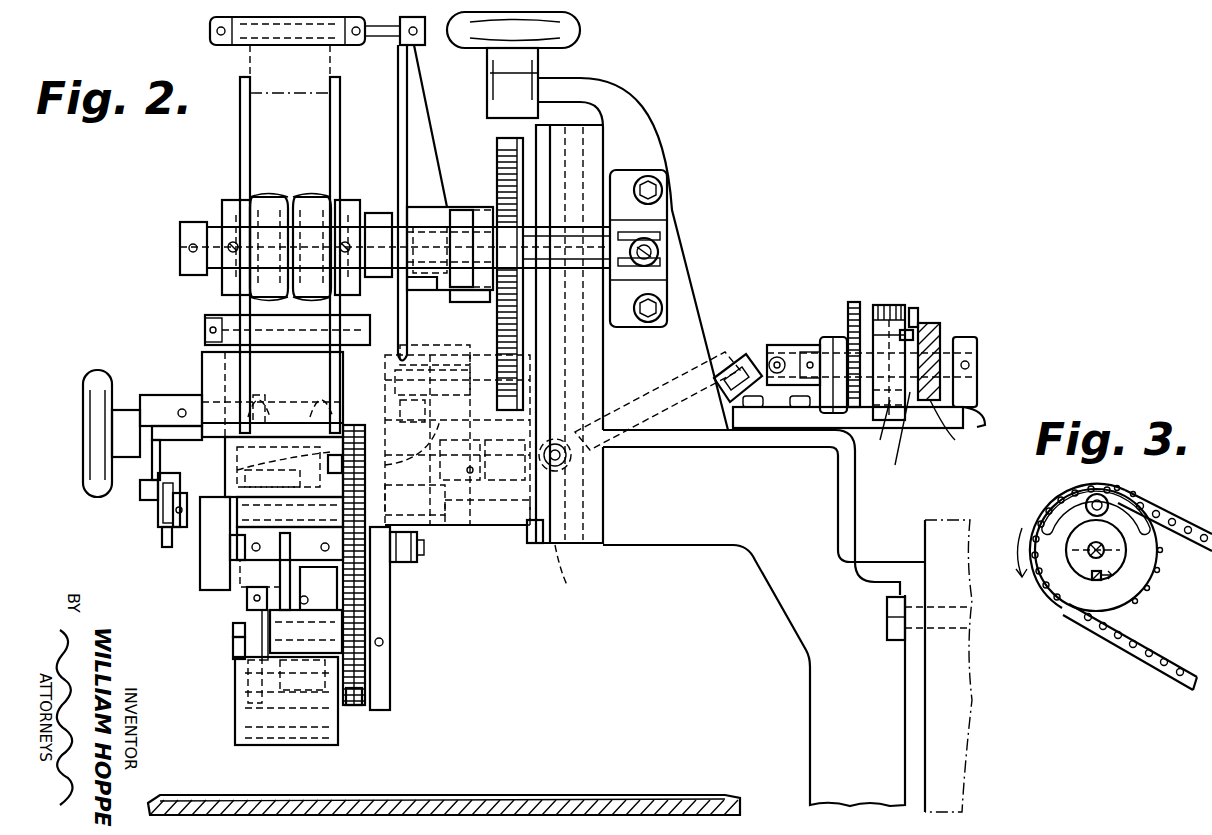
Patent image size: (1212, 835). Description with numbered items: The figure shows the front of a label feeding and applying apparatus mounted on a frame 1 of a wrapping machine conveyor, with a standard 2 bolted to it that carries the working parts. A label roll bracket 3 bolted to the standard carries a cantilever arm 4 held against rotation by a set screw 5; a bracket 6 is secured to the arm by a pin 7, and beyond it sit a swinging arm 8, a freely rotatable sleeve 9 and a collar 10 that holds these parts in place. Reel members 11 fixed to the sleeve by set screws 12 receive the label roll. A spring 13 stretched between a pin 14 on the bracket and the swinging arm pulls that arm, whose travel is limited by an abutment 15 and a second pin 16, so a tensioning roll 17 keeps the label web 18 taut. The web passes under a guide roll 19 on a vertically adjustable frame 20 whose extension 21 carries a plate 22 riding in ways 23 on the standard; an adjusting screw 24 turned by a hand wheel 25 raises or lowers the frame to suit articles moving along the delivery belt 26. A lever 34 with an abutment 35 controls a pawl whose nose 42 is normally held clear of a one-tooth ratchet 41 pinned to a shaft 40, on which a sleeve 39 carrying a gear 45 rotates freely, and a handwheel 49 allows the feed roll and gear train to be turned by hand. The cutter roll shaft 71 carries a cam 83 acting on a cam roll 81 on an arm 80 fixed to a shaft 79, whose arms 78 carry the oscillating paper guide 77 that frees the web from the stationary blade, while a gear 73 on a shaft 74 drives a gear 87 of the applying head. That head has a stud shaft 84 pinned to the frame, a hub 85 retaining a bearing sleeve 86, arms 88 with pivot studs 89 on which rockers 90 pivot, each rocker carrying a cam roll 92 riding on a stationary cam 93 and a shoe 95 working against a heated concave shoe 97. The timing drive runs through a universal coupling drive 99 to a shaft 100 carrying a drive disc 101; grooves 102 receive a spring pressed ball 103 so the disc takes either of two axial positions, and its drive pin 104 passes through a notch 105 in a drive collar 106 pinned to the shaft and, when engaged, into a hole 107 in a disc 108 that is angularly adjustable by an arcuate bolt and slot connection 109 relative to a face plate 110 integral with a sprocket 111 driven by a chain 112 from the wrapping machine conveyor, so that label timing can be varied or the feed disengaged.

In FIG. 2, the frame 1 is at (964, 684).
In FIG. 2, the standard 2 is at (798, 615).
In FIG. 2, the label roll bracket 3 is at (668, 215).
In FIG. 2, the cantilever arm 4 is at (660, 240).
In FIG. 2, the set screw 5 is at (660, 262).
In FIG. 2, the bracket 6 is at (462, 213).
In FIG. 2, the pin 7 is at (481, 224).
In FIG. 2, the swinging arm 8 is at (432, 138).
In FIG. 2, the sleeve 9 is at (375, 240).
In FIG. 2, the collar 10 is at (190, 228).
In FIG. 2, the reel members 11 is at (330, 147).
In FIG. 2, the set screws 12 is at (232, 243).
In FIG. 2, the spring 13 is at (408, 333).
In FIG. 2, the pin 14 is at (431, 215).
In FIG. 2, the abutment 15 is at (470, 306).
In FIG. 2, the second pin 16 is at (429, 250).
In FIG. 2, the tensioning roll 17 is at (345, 47).
In FIG. 2, the label web 18 is at (328, 72).
In FIG. 2, the guide roll 19 is at (232, 325).
In FIG. 2, the frame 20 is at (380, 690).
In FIG. 2, the extension 21 is at (510, 540).
In FIG. 2, the plate 22 is at (574, 571).
In FIG. 2, the ways 23 is at (538, 550).
In FIG. 2, the adjusting screw 24 is at (497, 158).
In FIG. 2, the hand wheel 25 is at (580, 32).
In FIG. 2, the delivery belt 26 is at (462, 793).
In FIG. 2, the lever 34 is at (420, 352).
In FIG. 2, the abutment 35 is at (465, 378).
In FIG. 2, the sleeve 39 is at (415, 504).
In FIG. 2, the shaft 40 is at (510, 470).
In FIG. 2, the one-tooth ratchet 41 is at (482, 530).
In FIG. 2, the nose 42 is at (490, 430).
In FIG. 2, the gear 45 is at (457, 440).
In FIG. 2, the handwheel 49 is at (90, 478).
In FIG. 2, the shaft 71 is at (173, 513).
In FIG. 2, the gear 73 is at (365, 557).
In FIG. 2, the shaft 74 is at (418, 550).
In FIG. 2, the oscillating paper guide 77 is at (293, 471).
In FIG. 2, the arms 78 is at (302, 470).
In FIG. 2, the shaft 79 is at (303, 402).
In FIG. 2, the arm 80 is at (165, 405).
In FIG. 2, the cam roll 81 is at (166, 480).
In FIG. 2, the cam 83 is at (165, 538).
In FIG. 2, the stud shaft 84 is at (245, 640).
In FIG. 2, the hub 85 is at (233, 628).
In FIG. 2, the bearing sleeve 86 is at (300, 662).
In FIG. 2, the gear 87 is at (355, 695).
In FIG. 2, the arms 88 is at (330, 583).
In FIG. 2, the pivot studs 89 is at (230, 560).
In FIG. 2, the rockers 90 is at (250, 573).
In FIG. 2, the cam roll 92 is at (288, 622).
In FIG. 2, the stationary cam 93 is at (258, 648).
In FIG. 2, the shoe 95 is at (252, 722).
In FIG. 2, the concave shoe 97 is at (230, 585).
In FIG. 2, the universal coupling drive 99 is at (662, 388).
In FIG. 3, the shaft 100 is at (1075, 546).
In FIG. 2, the drive disc 101 is at (940, 345).
In FIG. 2, the grooves 102 is at (977, 360).
In FIG. 2, the spring pressed ball 103 is at (915, 330).
In FIG. 2, the drive pin 104 is at (962, 426).
In FIG. 3, the drive pin 104 is at (1092, 582).
In FIG. 2, the notch 105 is at (888, 434).
In FIG. 3, the notch 105 is at (1112, 578).
In FIG. 3, the drive collar 106 is at (1088, 551).
In FIG. 2, the hole 107 is at (886, 426).
In FIG. 2, the disc 108 is at (897, 305).
In FIG. 3, the disc 108 is at (1052, 585).
In FIG. 2, the arcuate bolt and slot connection 109 is at (918, 312).
In FIG. 3, the arcuate bolt and slot connection 109 is at (1068, 518).
In FIG. 2, the face plate 110 is at (877, 305).
In FIG. 3, the sprocket 111 is at (1147, 602).
In FIG. 2, the chain 112 is at (848, 315).
In FIG. 3, the chain 112 is at (1160, 666).